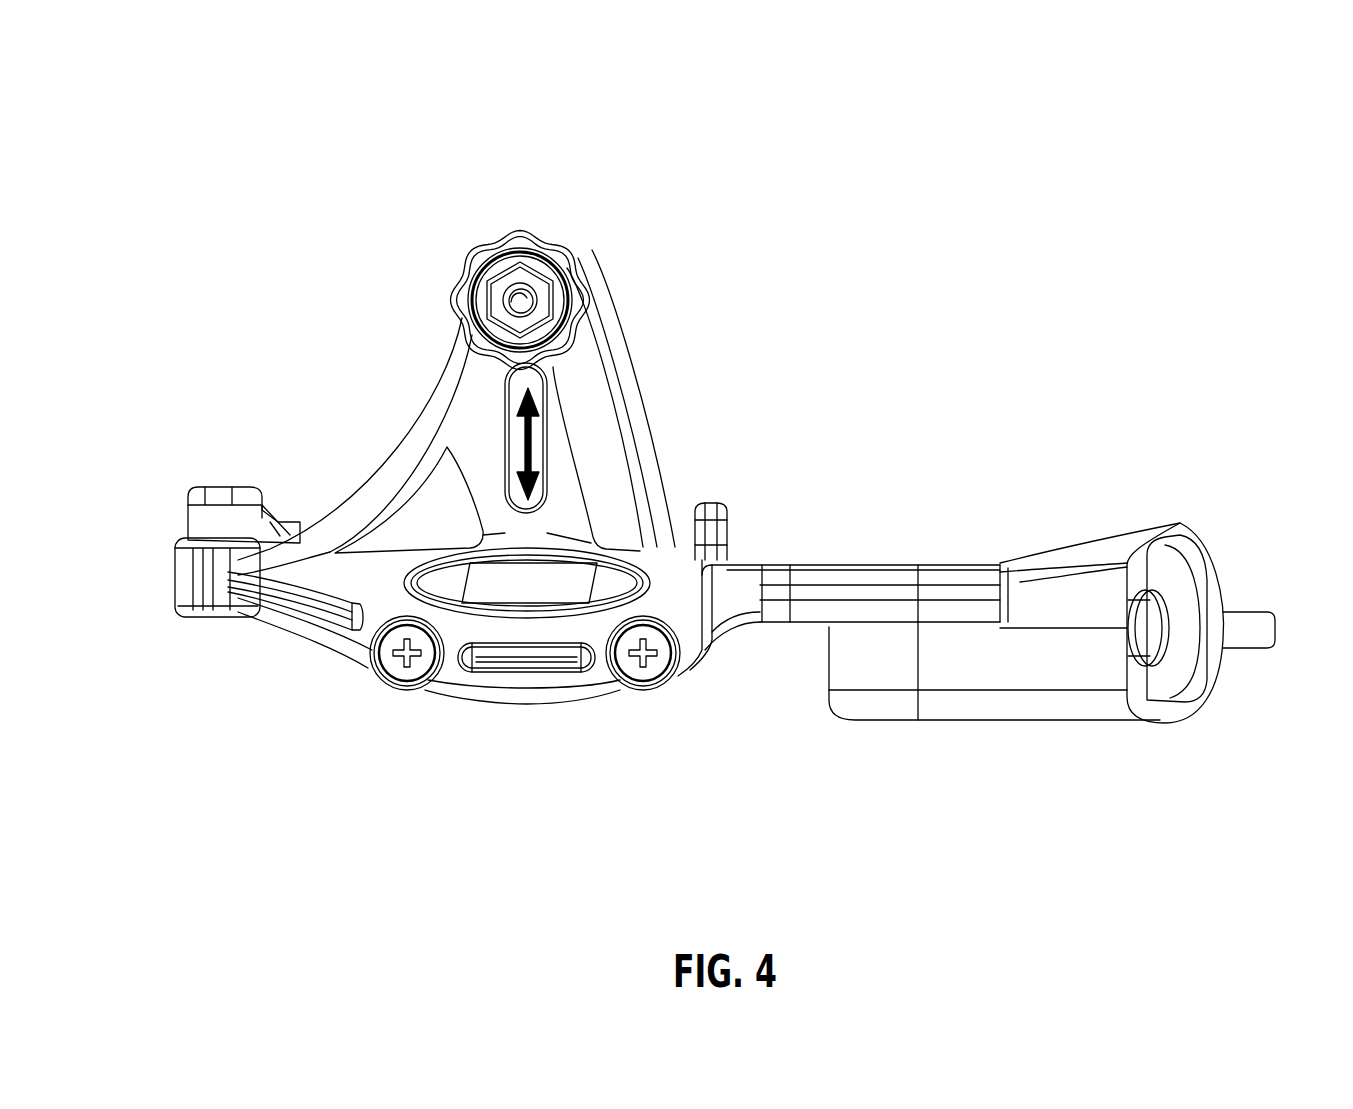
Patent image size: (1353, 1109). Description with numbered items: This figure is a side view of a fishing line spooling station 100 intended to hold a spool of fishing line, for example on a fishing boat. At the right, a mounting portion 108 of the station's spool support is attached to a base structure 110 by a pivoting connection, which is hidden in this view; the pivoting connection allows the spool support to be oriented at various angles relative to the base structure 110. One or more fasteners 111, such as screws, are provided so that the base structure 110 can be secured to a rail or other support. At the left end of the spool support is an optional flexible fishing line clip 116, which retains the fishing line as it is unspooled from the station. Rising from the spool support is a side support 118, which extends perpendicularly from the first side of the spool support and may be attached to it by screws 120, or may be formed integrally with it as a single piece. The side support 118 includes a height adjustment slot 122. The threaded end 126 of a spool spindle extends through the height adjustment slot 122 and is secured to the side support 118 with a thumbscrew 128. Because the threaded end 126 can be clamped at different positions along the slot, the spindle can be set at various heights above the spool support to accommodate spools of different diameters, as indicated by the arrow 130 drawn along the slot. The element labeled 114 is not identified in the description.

The fishing line spooling station 100 is at (344, 160).
The mounting portion 108 is at (850, 565).
The base structure 110 is at (1030, 718).
The fasteners 111 is at (1265, 648).
The clamp 114 is at (177, 570).
The flexible fishing line clip 116 is at (222, 488).
The side support 118 is at (432, 416).
The screws 120 is at (408, 672).
The height adjustment slot 122 is at (549, 405).
The threaded end 126 is at (527, 298).
The thumbscrew 128 is at (555, 243).
The arrow 130 is at (541, 450).